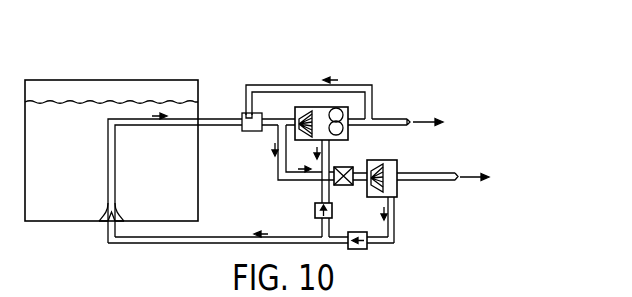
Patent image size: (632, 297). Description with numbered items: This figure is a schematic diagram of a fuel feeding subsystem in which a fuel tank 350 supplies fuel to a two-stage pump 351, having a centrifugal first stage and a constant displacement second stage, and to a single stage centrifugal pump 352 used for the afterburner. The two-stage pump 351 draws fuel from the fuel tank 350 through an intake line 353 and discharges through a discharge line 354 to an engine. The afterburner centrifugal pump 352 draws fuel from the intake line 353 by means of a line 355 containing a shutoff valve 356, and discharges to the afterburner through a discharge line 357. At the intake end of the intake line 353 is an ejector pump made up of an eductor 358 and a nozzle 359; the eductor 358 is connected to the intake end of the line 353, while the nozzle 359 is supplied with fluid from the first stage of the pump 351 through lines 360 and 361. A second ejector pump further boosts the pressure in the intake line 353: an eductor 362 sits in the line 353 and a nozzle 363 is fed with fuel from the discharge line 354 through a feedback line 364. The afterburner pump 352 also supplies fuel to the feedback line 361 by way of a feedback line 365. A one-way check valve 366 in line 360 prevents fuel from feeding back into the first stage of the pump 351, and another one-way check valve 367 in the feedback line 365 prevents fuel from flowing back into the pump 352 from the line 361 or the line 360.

The fuel tank 350 is at (183, 188).
The two-stage pump 351 is at (336, 106).
The single stage centrifugal pump 352 is at (393, 159).
The intake line 353 is at (220, 118).
The discharge line 354 is at (387, 118).
The line 355 is at (290, 182).
The shutoff valve 356 is at (344, 167).
The discharge line 357 is at (430, 172).
The eductor 358 is at (116, 207).
The nozzle 359 is at (103, 222).
The line 360 is at (327, 194).
The line 361 is at (186, 244).
The eductor 362 is at (262, 130).
The nozzle 363 is at (258, 117).
The feedback line 364 is at (310, 84).
The feedback line 365 is at (394, 213).
The one-way check valve 366 is at (314, 212).
The one-way check valve 367 is at (360, 250).